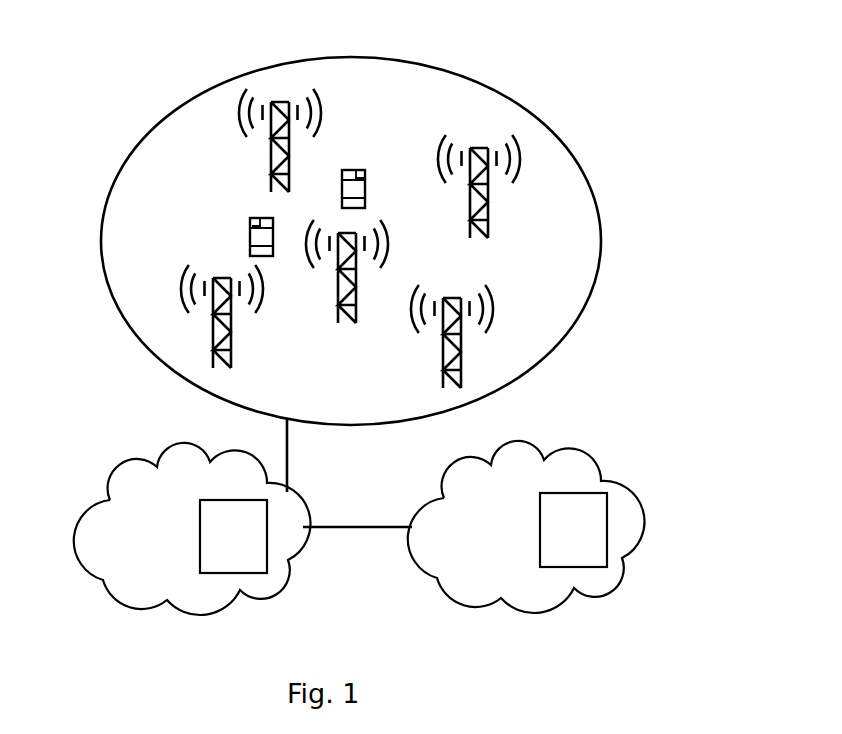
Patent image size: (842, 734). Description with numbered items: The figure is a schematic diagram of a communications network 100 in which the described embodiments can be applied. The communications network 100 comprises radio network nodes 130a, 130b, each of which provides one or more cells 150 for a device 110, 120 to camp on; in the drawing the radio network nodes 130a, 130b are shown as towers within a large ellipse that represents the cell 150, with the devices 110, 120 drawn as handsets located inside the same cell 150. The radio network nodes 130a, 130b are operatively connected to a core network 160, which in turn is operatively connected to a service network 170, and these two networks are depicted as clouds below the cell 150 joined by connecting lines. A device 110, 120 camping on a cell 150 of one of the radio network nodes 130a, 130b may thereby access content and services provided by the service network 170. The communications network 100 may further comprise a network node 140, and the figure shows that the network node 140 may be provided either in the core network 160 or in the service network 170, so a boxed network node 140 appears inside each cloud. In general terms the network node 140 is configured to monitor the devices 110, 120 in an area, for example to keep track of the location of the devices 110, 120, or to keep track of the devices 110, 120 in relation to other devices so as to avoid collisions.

The communications network 100 is at (591, 65).
The device 110 is at (363, 170).
The device 120 is at (250, 232).
The radio network node 130a is at (488, 203).
The radio network node 130b is at (271, 165).
The network node 140 is at (210, 532).
The cell 150 is at (148, 350).
The core network 160 is at (123, 500).
The service network 170 is at (463, 495).